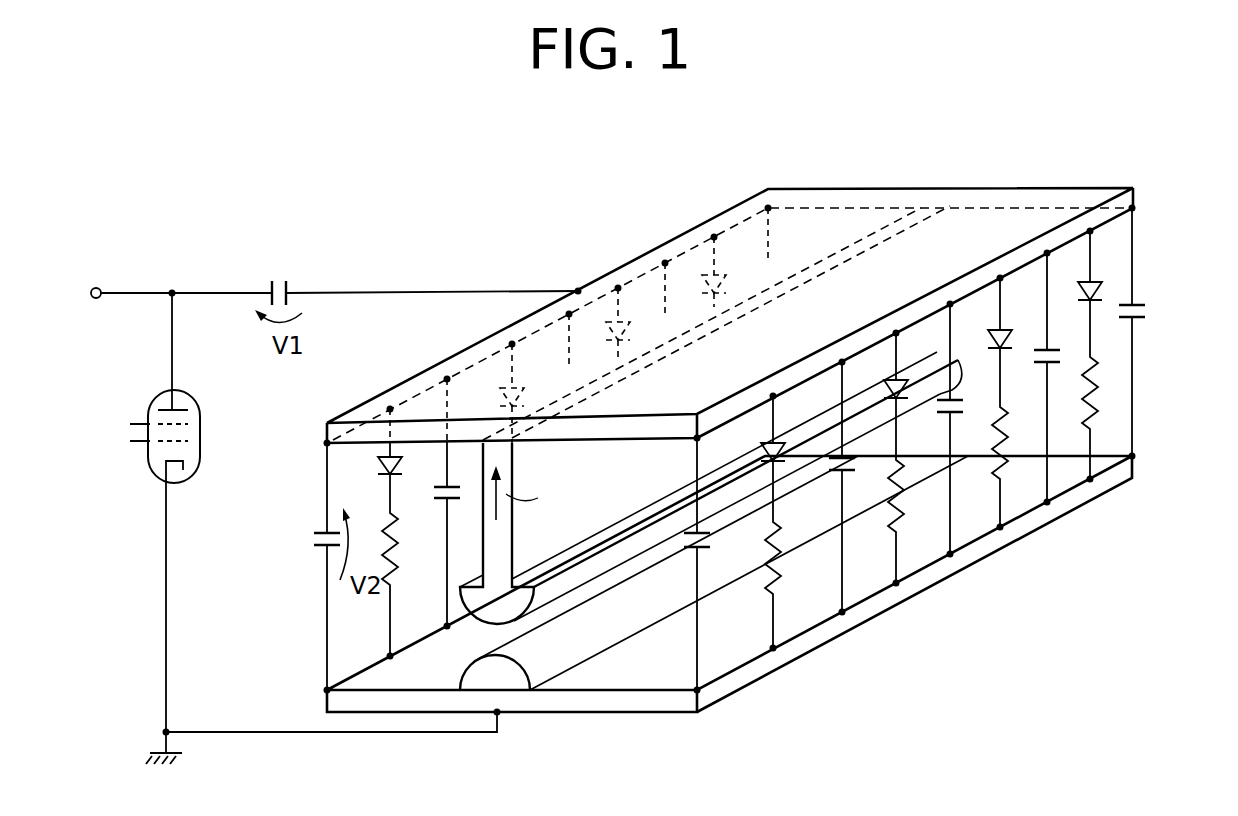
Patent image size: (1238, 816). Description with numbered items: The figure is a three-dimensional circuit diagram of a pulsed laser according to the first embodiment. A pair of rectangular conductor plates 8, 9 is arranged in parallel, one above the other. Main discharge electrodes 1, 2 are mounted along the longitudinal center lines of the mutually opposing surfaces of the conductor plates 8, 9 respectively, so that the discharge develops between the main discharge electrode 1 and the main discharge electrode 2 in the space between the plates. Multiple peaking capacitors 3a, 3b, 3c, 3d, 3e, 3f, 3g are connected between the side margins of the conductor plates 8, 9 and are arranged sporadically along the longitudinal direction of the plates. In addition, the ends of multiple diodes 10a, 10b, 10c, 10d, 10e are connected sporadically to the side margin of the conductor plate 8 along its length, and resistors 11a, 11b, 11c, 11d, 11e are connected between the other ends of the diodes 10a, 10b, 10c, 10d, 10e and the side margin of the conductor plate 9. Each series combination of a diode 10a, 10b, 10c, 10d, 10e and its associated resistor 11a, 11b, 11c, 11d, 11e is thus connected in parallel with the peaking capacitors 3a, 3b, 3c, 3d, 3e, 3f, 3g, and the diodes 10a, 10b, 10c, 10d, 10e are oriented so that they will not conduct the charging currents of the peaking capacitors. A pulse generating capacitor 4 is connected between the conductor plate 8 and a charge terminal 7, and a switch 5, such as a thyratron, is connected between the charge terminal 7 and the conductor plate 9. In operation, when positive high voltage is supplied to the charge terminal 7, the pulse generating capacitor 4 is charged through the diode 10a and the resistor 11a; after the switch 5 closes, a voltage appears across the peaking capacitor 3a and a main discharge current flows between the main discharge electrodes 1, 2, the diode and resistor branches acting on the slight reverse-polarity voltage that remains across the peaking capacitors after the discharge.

The main discharge electrode 1 is at (506, 598).
The main discharge electrode 2 is at (505, 674).
The peaking capacitor 3a is at (702, 551).
The peaking capacitor 3b is at (846, 473).
The peaking capacitor 3c is at (953, 416).
The peaking capacitor 3d is at (1062, 356).
The peaking capacitor 3e is at (1146, 314).
The peaking capacitor 3f is at (315, 540).
The peaking capacitor 3g is at (438, 487).
The pulse generating capacitor 4 is at (278, 282).
The switch 5 is at (137, 458).
The charge terminal 7 is at (96, 300).
The conductor plate 8 is at (862, 202).
The conductor plate 9 is at (632, 703).
The diode 10a is at (778, 462).
The diode 10b is at (899, 401).
The diode 10c is at (1000, 330).
The diode 10d is at (1094, 291).
The diode 10e is at (384, 458).
The resistor 11a is at (777, 600).
The resistor 11b is at (896, 534).
The resistor 11c is at (1003, 477).
The resistor 11d is at (1097, 396).
The resistor 11e is at (380, 524).